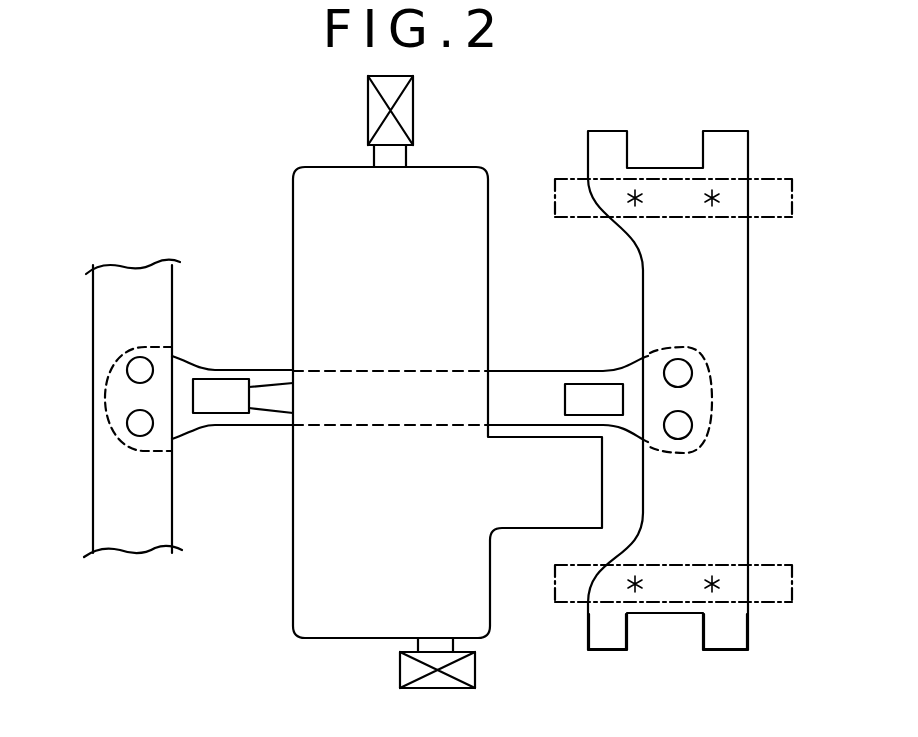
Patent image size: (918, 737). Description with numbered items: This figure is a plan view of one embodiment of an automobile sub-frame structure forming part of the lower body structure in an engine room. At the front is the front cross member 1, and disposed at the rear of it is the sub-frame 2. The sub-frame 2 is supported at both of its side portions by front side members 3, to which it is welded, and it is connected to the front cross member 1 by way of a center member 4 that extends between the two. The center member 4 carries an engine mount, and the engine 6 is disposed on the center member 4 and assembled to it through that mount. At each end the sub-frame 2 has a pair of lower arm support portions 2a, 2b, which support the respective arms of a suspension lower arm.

The front cross member 1 is at (93, 303).
The sub-frame 2 is at (730, 470).
The lower arm support portion 2a is at (607, 652).
The lower arm support portion 2b is at (725, 652).
The front side member 3 is at (765, 182).
The center member 4 is at (528, 376).
The engine 6 is at (293, 580).